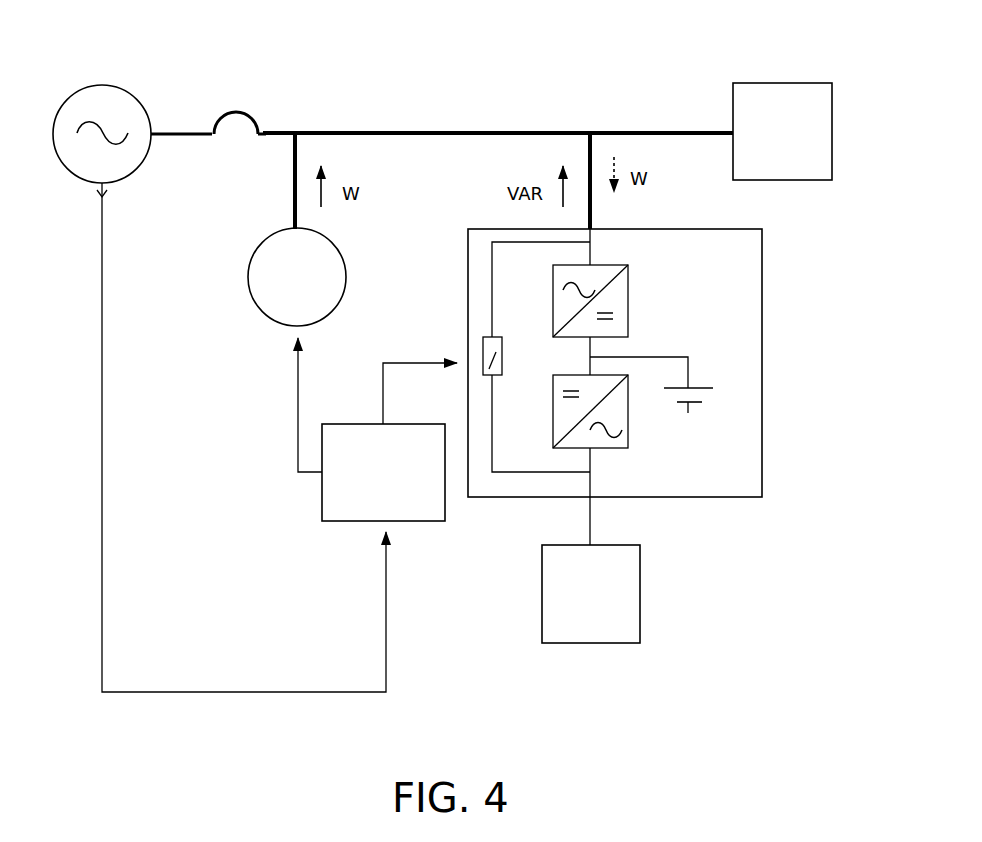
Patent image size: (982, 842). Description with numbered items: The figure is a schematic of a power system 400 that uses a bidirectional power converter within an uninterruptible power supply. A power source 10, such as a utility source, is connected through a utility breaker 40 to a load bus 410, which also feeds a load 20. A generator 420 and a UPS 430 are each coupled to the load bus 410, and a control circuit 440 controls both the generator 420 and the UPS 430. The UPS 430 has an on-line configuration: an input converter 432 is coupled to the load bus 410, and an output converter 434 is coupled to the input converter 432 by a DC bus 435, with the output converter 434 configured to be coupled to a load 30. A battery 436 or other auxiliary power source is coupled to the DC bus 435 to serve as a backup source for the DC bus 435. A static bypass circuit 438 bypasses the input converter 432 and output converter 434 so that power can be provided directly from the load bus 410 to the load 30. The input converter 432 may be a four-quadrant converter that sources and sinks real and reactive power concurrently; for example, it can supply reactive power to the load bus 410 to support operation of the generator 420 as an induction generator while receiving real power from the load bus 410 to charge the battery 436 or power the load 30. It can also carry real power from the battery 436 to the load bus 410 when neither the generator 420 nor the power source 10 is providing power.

The power source 10 is at (101, 85).
The load 20 is at (787, 83).
The load 30 is at (640, 592).
The utility breaker 40 is at (254, 86).
The power system 400 is at (520, 79).
The load bus 410 is at (318, 130).
The generator 420 is at (345, 277).
The UPS 430 is at (643, 387).
The input converter 432 is at (628, 302).
The output converter 434 is at (628, 410).
The DC bus 435 is at (588, 363).
The battery 436 is at (706, 358).
The static bypass circuit 438 is at (503, 342).
The control circuit 440 is at (445, 475).